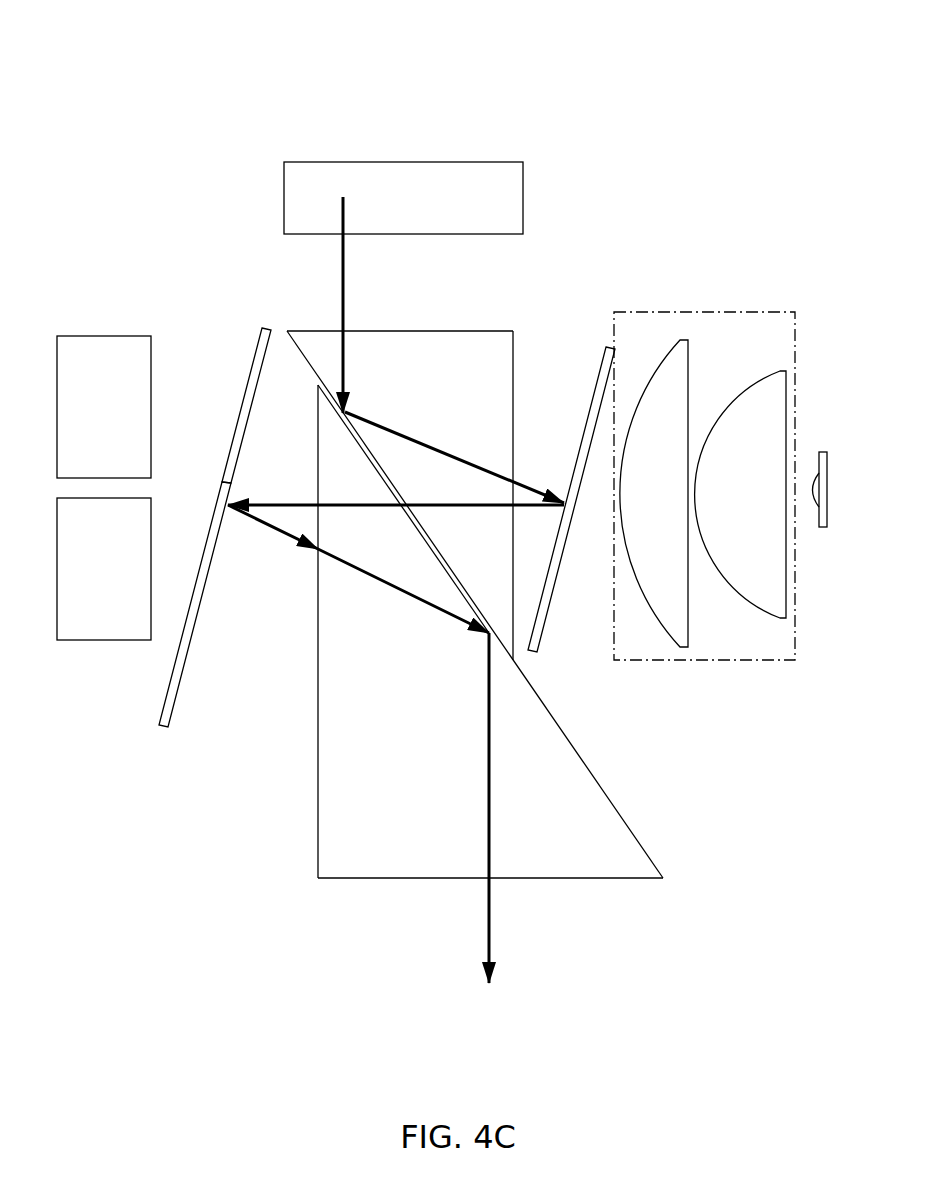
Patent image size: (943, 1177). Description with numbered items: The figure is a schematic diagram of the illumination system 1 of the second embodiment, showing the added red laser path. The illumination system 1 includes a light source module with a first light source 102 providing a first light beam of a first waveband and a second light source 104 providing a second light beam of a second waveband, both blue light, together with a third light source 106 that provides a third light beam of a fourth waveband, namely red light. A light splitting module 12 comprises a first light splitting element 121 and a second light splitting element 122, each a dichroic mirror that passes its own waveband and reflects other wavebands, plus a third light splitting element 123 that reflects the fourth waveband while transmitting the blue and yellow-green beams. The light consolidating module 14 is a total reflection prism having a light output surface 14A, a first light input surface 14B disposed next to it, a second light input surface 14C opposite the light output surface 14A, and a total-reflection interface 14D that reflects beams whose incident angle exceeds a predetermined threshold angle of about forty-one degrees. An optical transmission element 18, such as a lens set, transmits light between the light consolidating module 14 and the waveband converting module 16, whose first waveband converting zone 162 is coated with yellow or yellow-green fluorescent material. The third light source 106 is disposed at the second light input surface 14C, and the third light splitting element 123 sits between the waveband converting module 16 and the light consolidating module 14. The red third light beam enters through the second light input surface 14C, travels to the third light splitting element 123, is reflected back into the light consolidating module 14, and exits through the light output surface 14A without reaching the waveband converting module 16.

The illumination system 1 is at (184, 92).
The third light source 106 is at (380, 162).
The first light source 102 is at (56, 405).
The second light source 104 is at (56, 570).
The light splitting module 12 is at (191, 490).
The first light splitting element 121 is at (235, 437).
The second light splitting element 122 is at (162, 711).
The light consolidating module 14 is at (473, 587).
The light output surface 14A is at (340, 880).
The first light input surface 14B is at (318, 826).
The second light input surface 14C is at (383, 331).
The total-reflection interface 14D is at (632, 827).
The third light splitting element 123 is at (548, 616).
The optical transmission element 18 is at (665, 312).
The waveband converting module 16 is at (825, 467).
The first waveband converting zone 162 is at (818, 509).